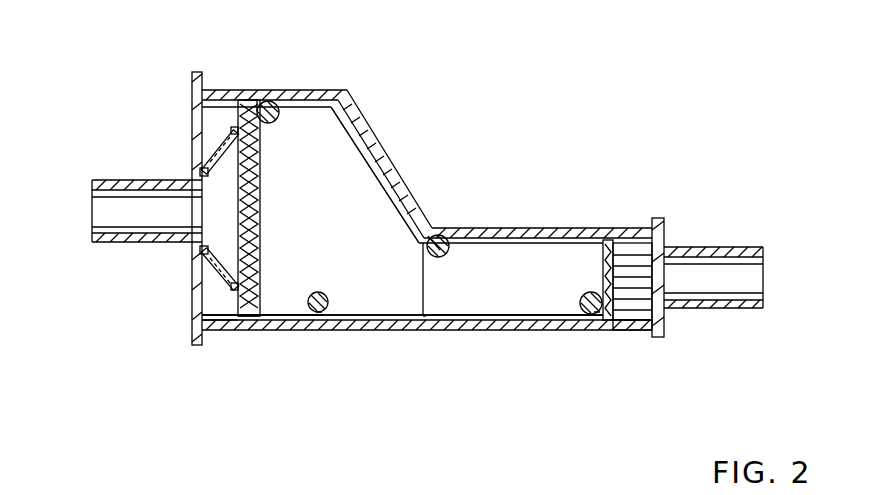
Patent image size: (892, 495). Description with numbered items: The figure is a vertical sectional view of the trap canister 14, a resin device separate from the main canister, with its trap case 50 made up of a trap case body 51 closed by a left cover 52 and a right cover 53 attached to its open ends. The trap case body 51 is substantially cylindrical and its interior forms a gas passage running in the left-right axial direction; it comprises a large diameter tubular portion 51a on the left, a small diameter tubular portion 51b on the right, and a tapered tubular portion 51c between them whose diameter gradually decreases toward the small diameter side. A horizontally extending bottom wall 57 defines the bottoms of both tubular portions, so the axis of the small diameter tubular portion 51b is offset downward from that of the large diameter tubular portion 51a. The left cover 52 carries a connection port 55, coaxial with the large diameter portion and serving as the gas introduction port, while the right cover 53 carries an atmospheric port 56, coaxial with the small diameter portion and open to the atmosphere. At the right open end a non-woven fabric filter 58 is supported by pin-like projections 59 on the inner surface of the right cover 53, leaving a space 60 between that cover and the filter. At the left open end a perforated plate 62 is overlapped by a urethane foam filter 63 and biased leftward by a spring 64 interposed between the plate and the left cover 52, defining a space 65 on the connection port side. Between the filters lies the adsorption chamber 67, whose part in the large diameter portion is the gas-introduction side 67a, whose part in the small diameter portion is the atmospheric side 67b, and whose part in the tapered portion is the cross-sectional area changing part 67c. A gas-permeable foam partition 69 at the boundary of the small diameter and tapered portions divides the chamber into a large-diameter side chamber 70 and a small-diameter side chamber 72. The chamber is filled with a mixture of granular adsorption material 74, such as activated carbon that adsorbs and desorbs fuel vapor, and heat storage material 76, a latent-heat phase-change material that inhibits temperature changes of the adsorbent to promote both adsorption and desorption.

The trap canister 14 is at (517, 132).
The trap case 50 is at (401, 111).
The trap case body 51 is at (392, 330).
The large diameter tubular portion 51a is at (322, 90).
The small diameter tubular portion 51b is at (557, 228).
The tapered tubular portion 51c is at (404, 191).
The left cover 52 is at (192, 123).
The right cover 53 is at (664, 232).
The connection port 55 is at (118, 242).
The atmospheric port 56 is at (716, 308).
The bottom wall 57 is at (426, 330).
The filter 58 is at (607, 240).
The pin-like projections 59 is at (630, 330).
The space 60 is at (626, 272).
The perforated plate 62 is at (248, 326).
The filter 63 is at (262, 221).
The spring 64 is at (216, 273).
The space 65 is at (218, 330).
The adsorption chamber 67 is at (506, 312).
The gas-introduction side 67a is at (288, 316).
The atmospheric side 67b is at (528, 328).
The cross-sectional area changing part 67c is at (393, 160).
The gas-permeable partition 69 is at (422, 282).
The large-diameter side chamber 70 is at (344, 150).
The small-diameter side chamber 72 is at (526, 249).
The granular adsorption material 74 is at (263, 101).
The heat storage material 76 is at (270, 124).